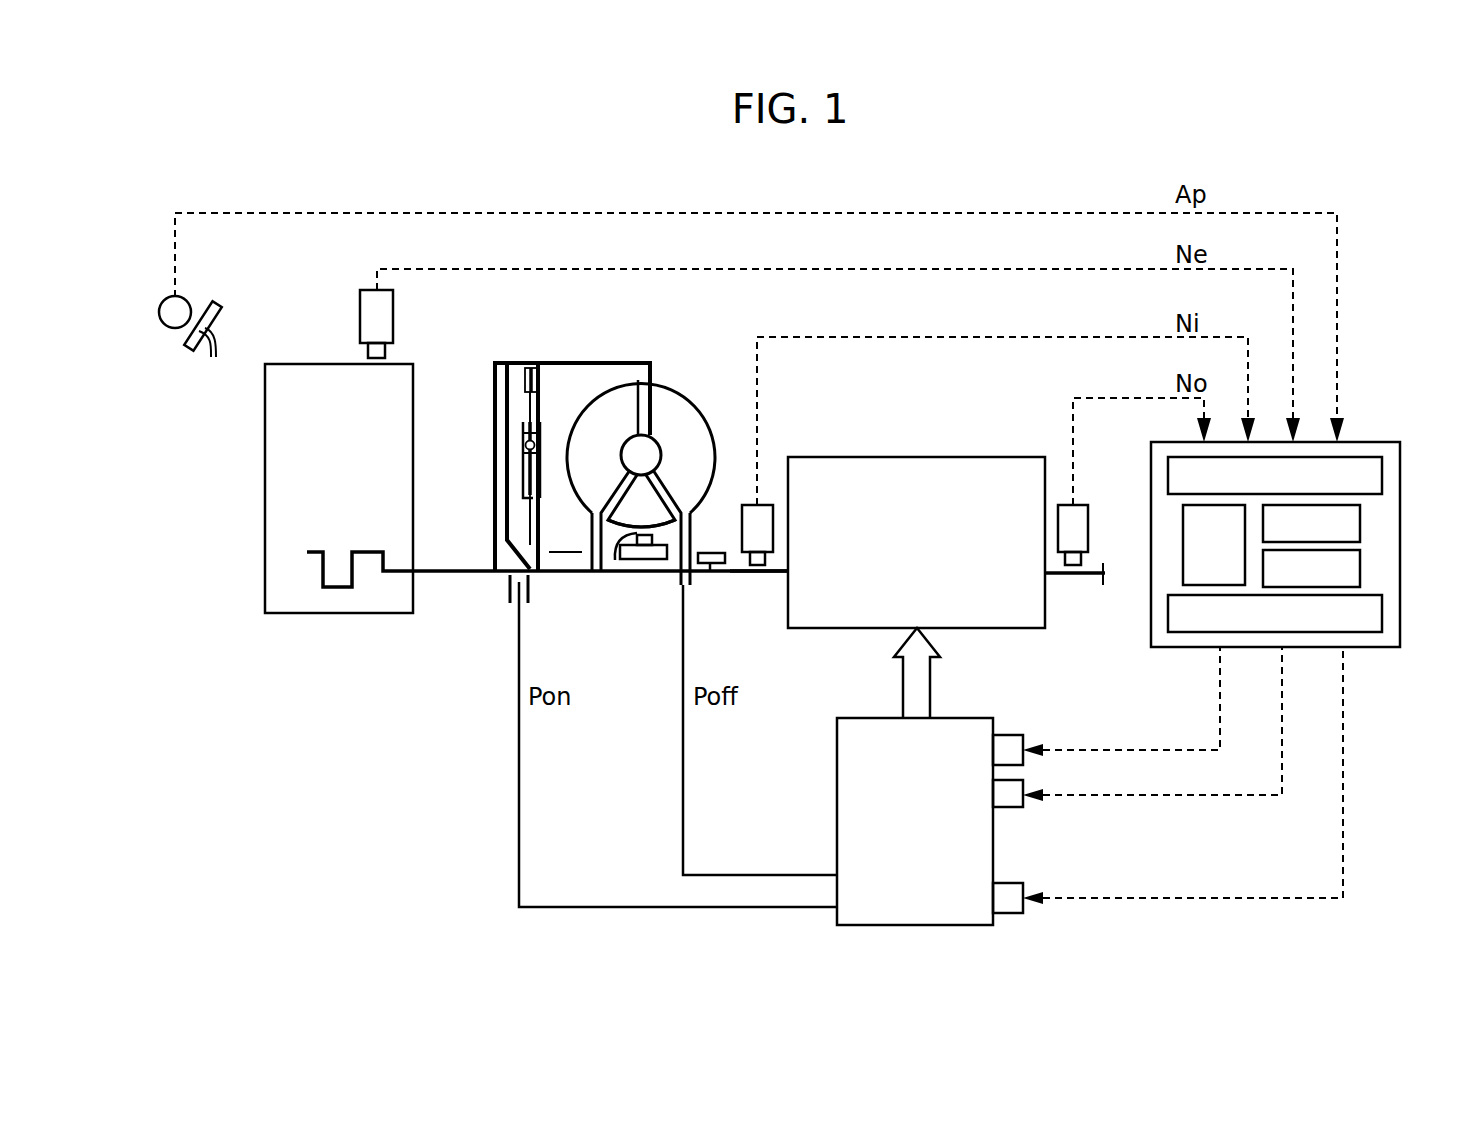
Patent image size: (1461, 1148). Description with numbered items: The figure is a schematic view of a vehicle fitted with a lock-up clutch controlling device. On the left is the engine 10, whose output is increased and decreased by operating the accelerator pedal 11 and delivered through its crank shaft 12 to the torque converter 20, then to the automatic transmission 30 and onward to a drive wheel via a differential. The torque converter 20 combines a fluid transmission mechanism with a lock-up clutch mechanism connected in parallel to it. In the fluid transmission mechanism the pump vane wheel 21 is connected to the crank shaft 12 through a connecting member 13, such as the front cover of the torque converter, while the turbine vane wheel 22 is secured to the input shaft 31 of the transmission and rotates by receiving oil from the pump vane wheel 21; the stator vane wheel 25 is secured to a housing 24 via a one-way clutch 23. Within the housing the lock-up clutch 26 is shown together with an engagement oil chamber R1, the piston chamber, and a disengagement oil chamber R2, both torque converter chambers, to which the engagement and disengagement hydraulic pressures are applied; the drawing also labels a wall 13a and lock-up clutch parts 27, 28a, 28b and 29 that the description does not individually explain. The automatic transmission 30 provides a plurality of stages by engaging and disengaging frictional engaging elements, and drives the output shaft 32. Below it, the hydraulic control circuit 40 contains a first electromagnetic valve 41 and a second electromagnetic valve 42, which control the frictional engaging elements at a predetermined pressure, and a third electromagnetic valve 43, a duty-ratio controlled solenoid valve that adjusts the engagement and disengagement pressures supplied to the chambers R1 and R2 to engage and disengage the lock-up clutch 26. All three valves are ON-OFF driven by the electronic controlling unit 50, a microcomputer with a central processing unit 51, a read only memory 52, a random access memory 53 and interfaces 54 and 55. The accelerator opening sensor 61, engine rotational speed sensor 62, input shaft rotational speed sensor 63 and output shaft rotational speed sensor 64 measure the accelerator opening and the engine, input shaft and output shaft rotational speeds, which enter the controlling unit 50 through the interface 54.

The engine 10 is at (265, 478).
The accelerator pedal 11 is at (213, 310).
The crank shaft 12 is at (452, 576).
The connecting member 13 is at (544, 424).
The housing wall 13a is at (545, 367).
The torque converter 20 is at (646, 466).
The pump vane wheel 21 is at (686, 383).
The turbine vane wheel 22 is at (597, 382).
The one-way clutch 23 is at (618, 562).
The housing 24 is at (710, 572).
The stator vane wheel 25 is at (618, 519).
The lock-up clutch 26 is at (520, 372).
The clutch plate 27 is at (527, 406).
The friction material 28a is at (535, 533).
The friction material 28b is at (526, 466).
The piston 29 is at (523, 429).
The engagement oil chamber R1 is at (507, 491).
The disengagement oil chamber R2 is at (565, 538).
The automatic transmission 30 is at (970, 457).
The input shaft 31 is at (743, 576).
The output shaft 32 is at (1072, 579).
The hydraulic control circuit 40 is at (915, 776).
The first electromagnetic valve 41 is at (1023, 737).
The second electromagnetic valve 42 is at (1023, 781).
The third electromagnetic valve 43 is at (1022, 884).
The electronic controlling unit 50 is at (1282, 512).
The central processing unit 51 is at (1183, 531).
The read only memory 52 is at (1360, 526).
The random access memory 53 is at (1360, 569).
The interface 54 is at (1382, 479).
The interface 55 is at (1382, 618).
The accelerator opening sensor 61 is at (162, 312).
The engine rotational speed sensor 62 is at (362, 312).
The input shaft rotational speed sensor 63 is at (745, 527).
The output shaft rotational speed sensor 64 is at (1088, 513).